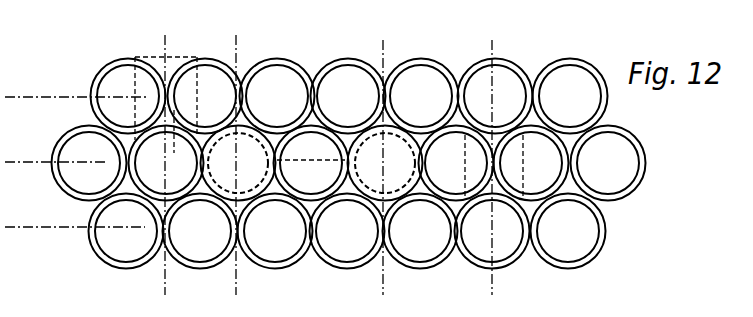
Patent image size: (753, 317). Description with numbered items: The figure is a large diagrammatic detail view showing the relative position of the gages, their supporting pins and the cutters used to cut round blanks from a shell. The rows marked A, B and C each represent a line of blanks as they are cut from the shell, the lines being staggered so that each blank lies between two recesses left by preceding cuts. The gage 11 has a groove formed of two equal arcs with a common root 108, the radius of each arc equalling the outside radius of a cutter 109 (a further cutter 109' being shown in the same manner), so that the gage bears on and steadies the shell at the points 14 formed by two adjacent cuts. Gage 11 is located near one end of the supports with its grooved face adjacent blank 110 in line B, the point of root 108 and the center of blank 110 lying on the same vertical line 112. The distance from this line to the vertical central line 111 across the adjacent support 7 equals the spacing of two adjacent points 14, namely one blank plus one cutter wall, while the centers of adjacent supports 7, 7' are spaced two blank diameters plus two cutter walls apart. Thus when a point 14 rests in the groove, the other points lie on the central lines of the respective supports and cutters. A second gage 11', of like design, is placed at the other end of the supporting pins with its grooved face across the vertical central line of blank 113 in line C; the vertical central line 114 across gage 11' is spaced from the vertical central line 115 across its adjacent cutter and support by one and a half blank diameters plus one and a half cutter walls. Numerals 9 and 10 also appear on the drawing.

The line of blanks A is at (76, 94).
The line of blanks B is at (56, 160).
The line of blanks C is at (75, 224).
The gage 11 is at (128, 80).
The gage 11' is at (570, 96).
The points 14 is at (155, 112).
The root 108 is at (173, 112).
The cutter 109 is at (349, 130).
The cutter 109' is at (311, 163).
The blank 110 is at (166, 163).
The vertical line 112 is at (169, 156).
The vertical central line 111 is at (240, 156).
The vertical central line 115 is at (390, 157).
The vertical central line 114 is at (500, 157).
The inner core 9 is at (311, 163).
The casing 10 is at (312, 163).
The support 7 is at (275, 231).
The support 7' is at (420, 231).
The blank 113 is at (492, 231).